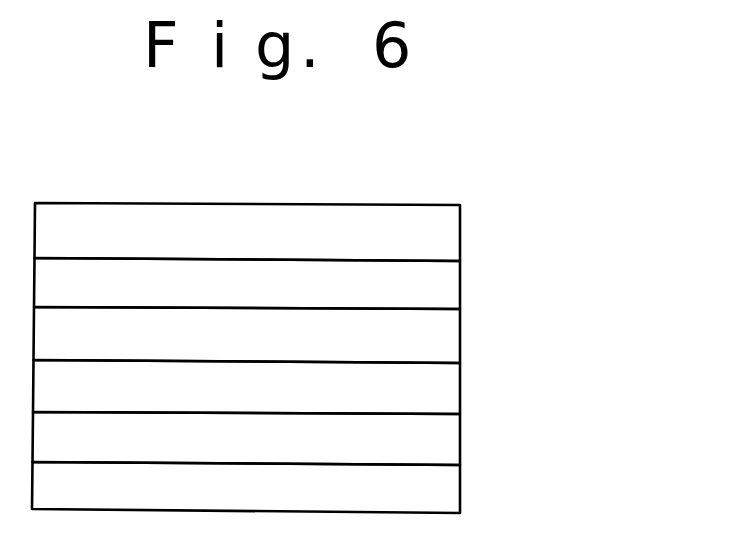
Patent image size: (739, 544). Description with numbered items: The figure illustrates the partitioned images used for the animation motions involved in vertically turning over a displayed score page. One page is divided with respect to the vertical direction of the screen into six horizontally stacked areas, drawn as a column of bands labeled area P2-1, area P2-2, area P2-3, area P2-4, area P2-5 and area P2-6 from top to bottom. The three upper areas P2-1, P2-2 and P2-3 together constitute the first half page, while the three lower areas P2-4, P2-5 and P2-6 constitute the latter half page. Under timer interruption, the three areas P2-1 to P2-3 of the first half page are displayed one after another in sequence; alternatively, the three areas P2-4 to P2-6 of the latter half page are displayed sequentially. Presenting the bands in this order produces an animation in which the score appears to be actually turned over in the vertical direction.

The area P2-1 is at (452, 230).
The area P2-2 is at (452, 285).
The area P2-3 is at (452, 338).
The area P2-4 is at (452, 391).
The area P2-5 is at (452, 442).
The area P2-6 is at (452, 492).